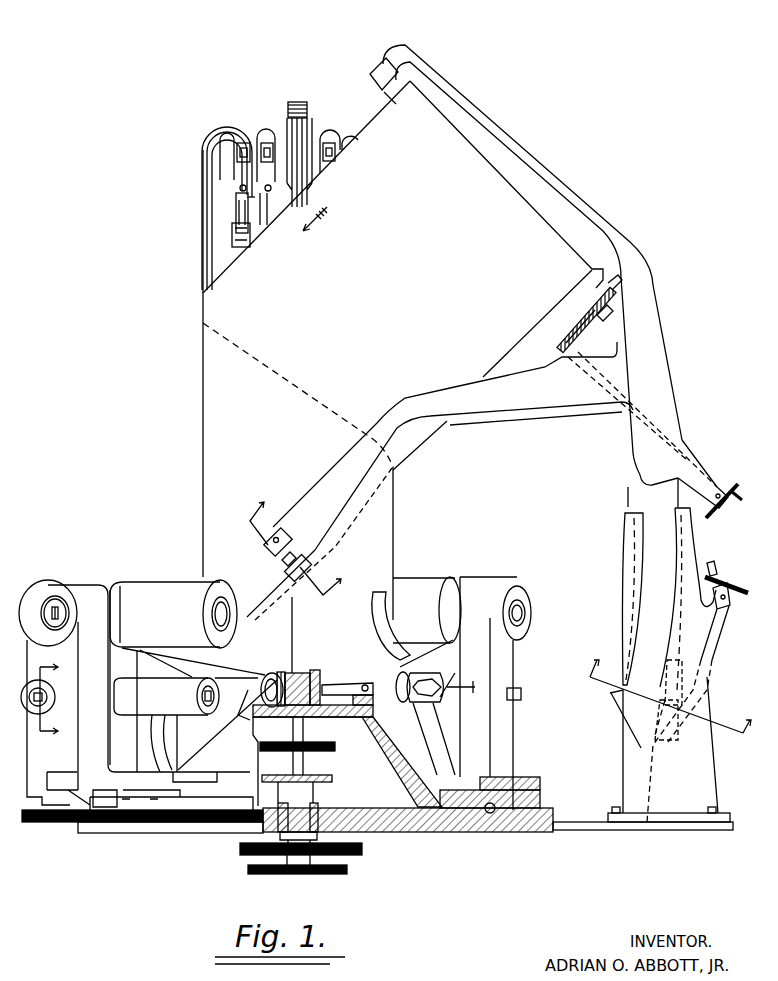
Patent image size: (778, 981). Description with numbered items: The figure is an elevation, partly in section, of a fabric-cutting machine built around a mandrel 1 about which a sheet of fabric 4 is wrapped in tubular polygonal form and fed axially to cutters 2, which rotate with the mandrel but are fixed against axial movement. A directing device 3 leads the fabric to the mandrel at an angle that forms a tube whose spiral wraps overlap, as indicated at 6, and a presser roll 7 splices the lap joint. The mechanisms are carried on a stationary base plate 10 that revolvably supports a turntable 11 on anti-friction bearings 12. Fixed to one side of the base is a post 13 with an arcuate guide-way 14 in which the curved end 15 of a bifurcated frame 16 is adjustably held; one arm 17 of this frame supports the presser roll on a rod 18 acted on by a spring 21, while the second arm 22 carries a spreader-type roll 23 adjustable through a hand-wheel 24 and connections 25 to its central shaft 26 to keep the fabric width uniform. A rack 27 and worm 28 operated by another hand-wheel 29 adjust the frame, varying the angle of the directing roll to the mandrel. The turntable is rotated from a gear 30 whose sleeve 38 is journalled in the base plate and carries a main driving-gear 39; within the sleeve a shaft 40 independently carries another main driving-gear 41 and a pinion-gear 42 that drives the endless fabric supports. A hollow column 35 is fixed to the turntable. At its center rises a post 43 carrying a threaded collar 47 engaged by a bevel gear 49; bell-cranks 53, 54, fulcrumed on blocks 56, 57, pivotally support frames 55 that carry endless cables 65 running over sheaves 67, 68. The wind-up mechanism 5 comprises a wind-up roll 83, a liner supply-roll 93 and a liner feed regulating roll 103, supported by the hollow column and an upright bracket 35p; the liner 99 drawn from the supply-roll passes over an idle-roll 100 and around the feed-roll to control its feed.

The mandrel 1 is at (288, 148).
The cutters 2 is at (390, 618).
The directing device 3 is at (400, 45).
The sheet of fabric 4 is at (321, 410).
The wind-up mechanism 5 is at (157, 580).
The overlap 6 is at (372, 490).
The presser roll 7 is at (310, 560).
The base plate 10 is at (468, 832).
The turntable 11 is at (526, 772).
The anti-friction bearings 12 is at (505, 838).
The post 13 is at (710, 773).
The arcuate guide-way 14 is at (690, 556).
The curved end 15 is at (627, 585).
The bifurcated frame 16 is at (665, 375).
The arm 17 is at (490, 410).
The rod 18 is at (286, 566).
The spring 21 is at (293, 543).
The second arm 22 is at (515, 140).
The roll 23 is at (380, 96).
The hand-wheel 24 is at (726, 484).
The connections 25 is at (575, 335).
The central shaft 26 is at (606, 318).
The rack 27 is at (685, 672).
The worm 28 is at (680, 715).
The hand-wheel 29 is at (732, 582).
The gear 30 is at (333, 781).
The hollow column 35 is at (77, 752).
The upright bracket 35p is at (170, 742).
The sleeve 38 is at (312, 802).
The main driving-gear 39 is at (238, 850).
The shaft 40 is at (293, 765).
The main driving-gear 41 is at (250, 872).
The pinion-gear 42 is at (336, 748).
The post 43 is at (296, 670).
The collar 47 is at (316, 670).
The bevel gear 49 is at (362, 683).
The bell-crank 53 is at (352, 695).
The bell-crank 54 is at (262, 218).
The frame 55 is at (236, 198).
The block 56 is at (398, 685).
The block 57 is at (246, 247).
The cables 65 is at (210, 176).
The sheave 67 is at (234, 134).
The sheave 68 is at (288, 128).
The wind-up roll 83 is at (226, 605).
The liner supply-roll 93 is at (130, 680).
The liner 99 is at (236, 697).
The idle-roll 100 is at (248, 718).
The liner feed regulating roll 103 is at (272, 673).